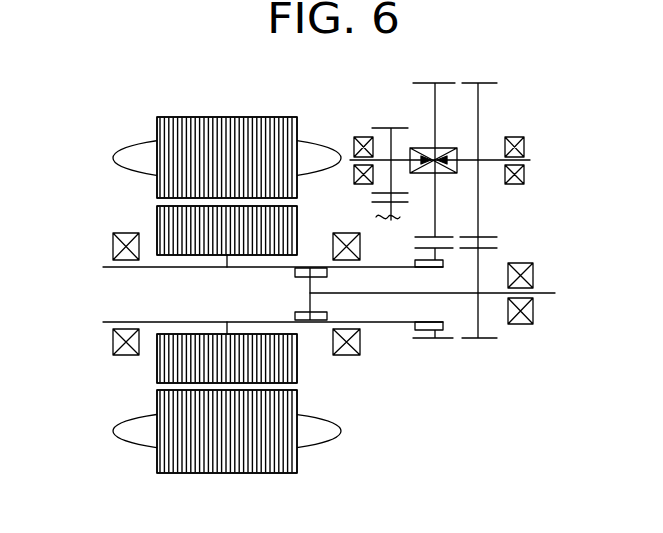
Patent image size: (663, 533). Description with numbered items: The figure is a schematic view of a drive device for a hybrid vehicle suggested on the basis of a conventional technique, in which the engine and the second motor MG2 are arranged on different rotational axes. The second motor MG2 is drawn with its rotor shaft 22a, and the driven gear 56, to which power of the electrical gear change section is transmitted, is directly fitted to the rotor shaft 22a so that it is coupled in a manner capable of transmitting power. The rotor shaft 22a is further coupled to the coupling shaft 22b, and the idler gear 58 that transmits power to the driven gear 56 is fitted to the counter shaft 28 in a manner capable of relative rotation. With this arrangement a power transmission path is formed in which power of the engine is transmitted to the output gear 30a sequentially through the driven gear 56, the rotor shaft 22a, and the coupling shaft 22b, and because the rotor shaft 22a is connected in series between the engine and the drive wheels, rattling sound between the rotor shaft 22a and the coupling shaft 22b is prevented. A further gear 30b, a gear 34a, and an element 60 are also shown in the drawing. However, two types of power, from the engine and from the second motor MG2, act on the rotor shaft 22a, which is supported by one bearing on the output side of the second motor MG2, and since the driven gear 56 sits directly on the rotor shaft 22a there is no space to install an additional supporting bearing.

The second motor MG2 is at (121, 205).
The rotor shaft 22a is at (233, 269).
The coupling shaft 22b is at (336, 294).
The counter shaft 28 is at (493, 162).
The output gear 30a is at (487, 339).
The counter gear 30b is at (497, 83).
The drive gear 34a is at (391, 128).
The driven gear 56 is at (420, 339).
The idler gear 58 is at (433, 107).
The clutch 60 is at (434, 150).